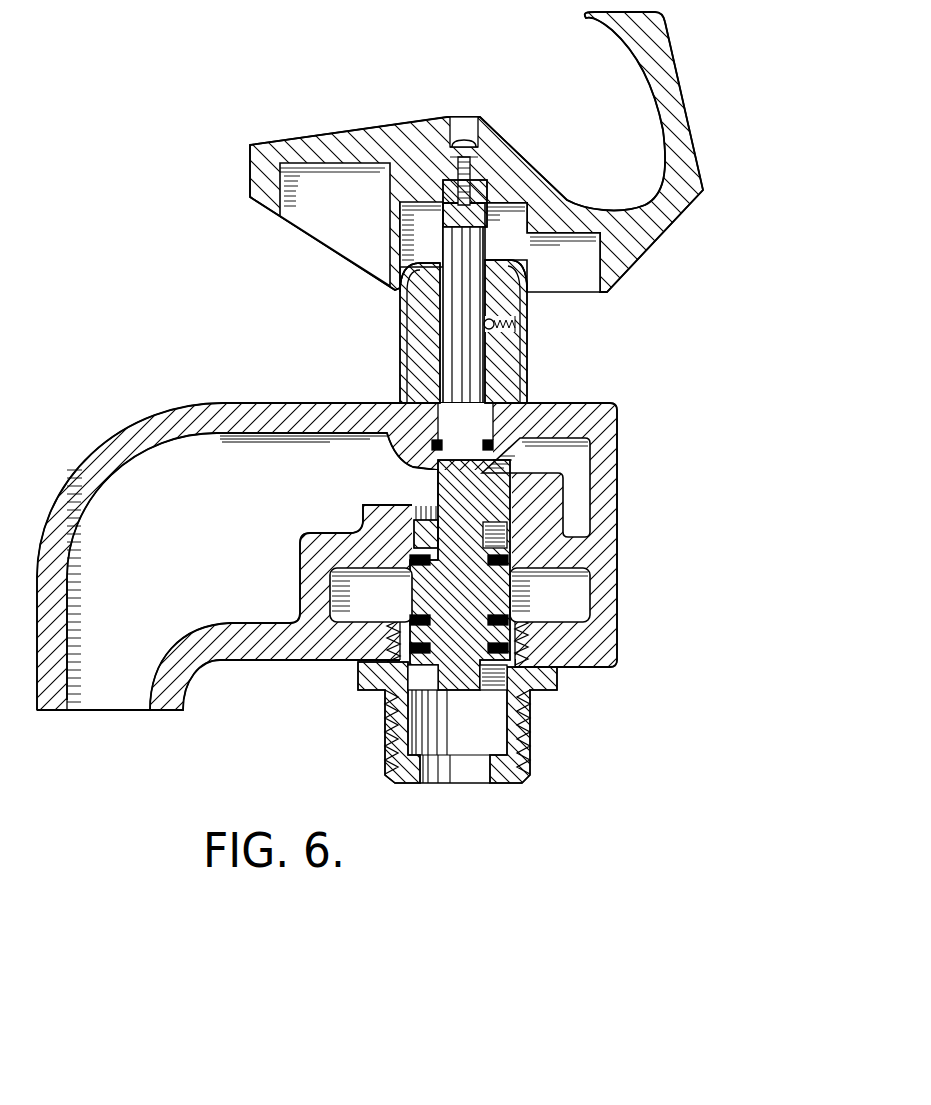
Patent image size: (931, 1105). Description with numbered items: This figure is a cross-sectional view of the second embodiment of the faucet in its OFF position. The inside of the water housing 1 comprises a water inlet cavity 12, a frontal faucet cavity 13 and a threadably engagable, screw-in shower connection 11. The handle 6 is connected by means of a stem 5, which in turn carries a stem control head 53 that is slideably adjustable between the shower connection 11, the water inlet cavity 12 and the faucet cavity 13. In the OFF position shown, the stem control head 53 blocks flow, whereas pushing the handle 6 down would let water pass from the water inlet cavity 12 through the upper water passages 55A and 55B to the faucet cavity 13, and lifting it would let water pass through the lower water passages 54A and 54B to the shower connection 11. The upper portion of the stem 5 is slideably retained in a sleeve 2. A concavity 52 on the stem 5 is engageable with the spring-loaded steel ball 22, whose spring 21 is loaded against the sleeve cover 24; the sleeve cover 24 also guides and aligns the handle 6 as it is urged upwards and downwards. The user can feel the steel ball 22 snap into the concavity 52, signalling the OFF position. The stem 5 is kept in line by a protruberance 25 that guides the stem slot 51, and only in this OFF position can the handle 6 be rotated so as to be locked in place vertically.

The water housing 1 is at (626, 408).
The sleeve 2 is at (541, 386).
The stem 5 is at (473, 237).
The handle 6 is at (655, 86).
The shower connection 11 is at (530, 755).
The water inlet cavity 12 is at (567, 609).
The faucet cavity 13 is at (580, 474).
The spring 21 is at (520, 316).
The steel ball 22 is at (523, 343).
The sleeve cover 24 is at (402, 348).
The protruberance 25 is at (410, 290).
The stem slot 51 is at (402, 383).
The concavity 52 is at (517, 265).
The stem control head 53 is at (423, 595).
The lower water passage 54A is at (415, 677).
The lower water passage 54B is at (497, 678).
The upper water passage 55A is at (422, 537).
The upper water passage 55B is at (500, 533).